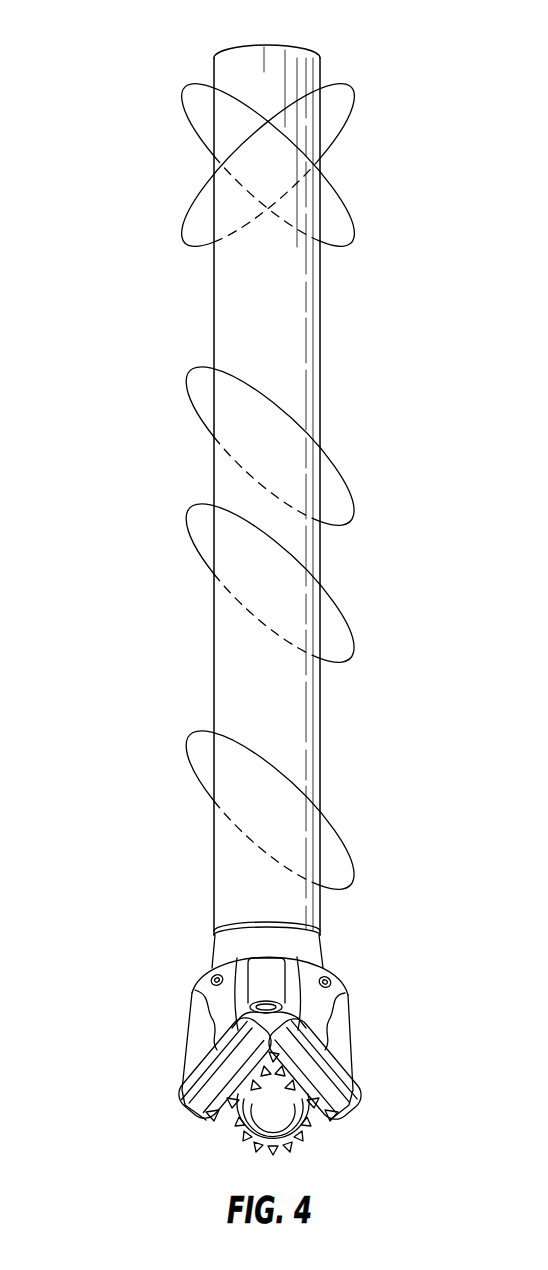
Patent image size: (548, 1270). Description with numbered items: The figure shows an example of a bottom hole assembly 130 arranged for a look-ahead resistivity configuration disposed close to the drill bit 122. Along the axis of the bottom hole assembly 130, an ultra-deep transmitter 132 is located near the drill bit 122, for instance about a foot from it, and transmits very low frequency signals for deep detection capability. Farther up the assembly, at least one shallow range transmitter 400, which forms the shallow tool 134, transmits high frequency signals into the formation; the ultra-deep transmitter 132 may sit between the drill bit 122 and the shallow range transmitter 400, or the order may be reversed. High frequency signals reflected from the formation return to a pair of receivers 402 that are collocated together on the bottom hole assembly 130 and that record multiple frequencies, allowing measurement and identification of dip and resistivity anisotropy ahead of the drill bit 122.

The shallow tool 134 is at (160, 452).
The collocated receivers 402 is at (348, 106).
The shallow range transmitter 400 is at (352, 518).
The ultra-deep transmitter 132 is at (352, 891).
The bottom hole assembly 130 is at (237, 1038).
The drill bit 122 is at (348, 1050).